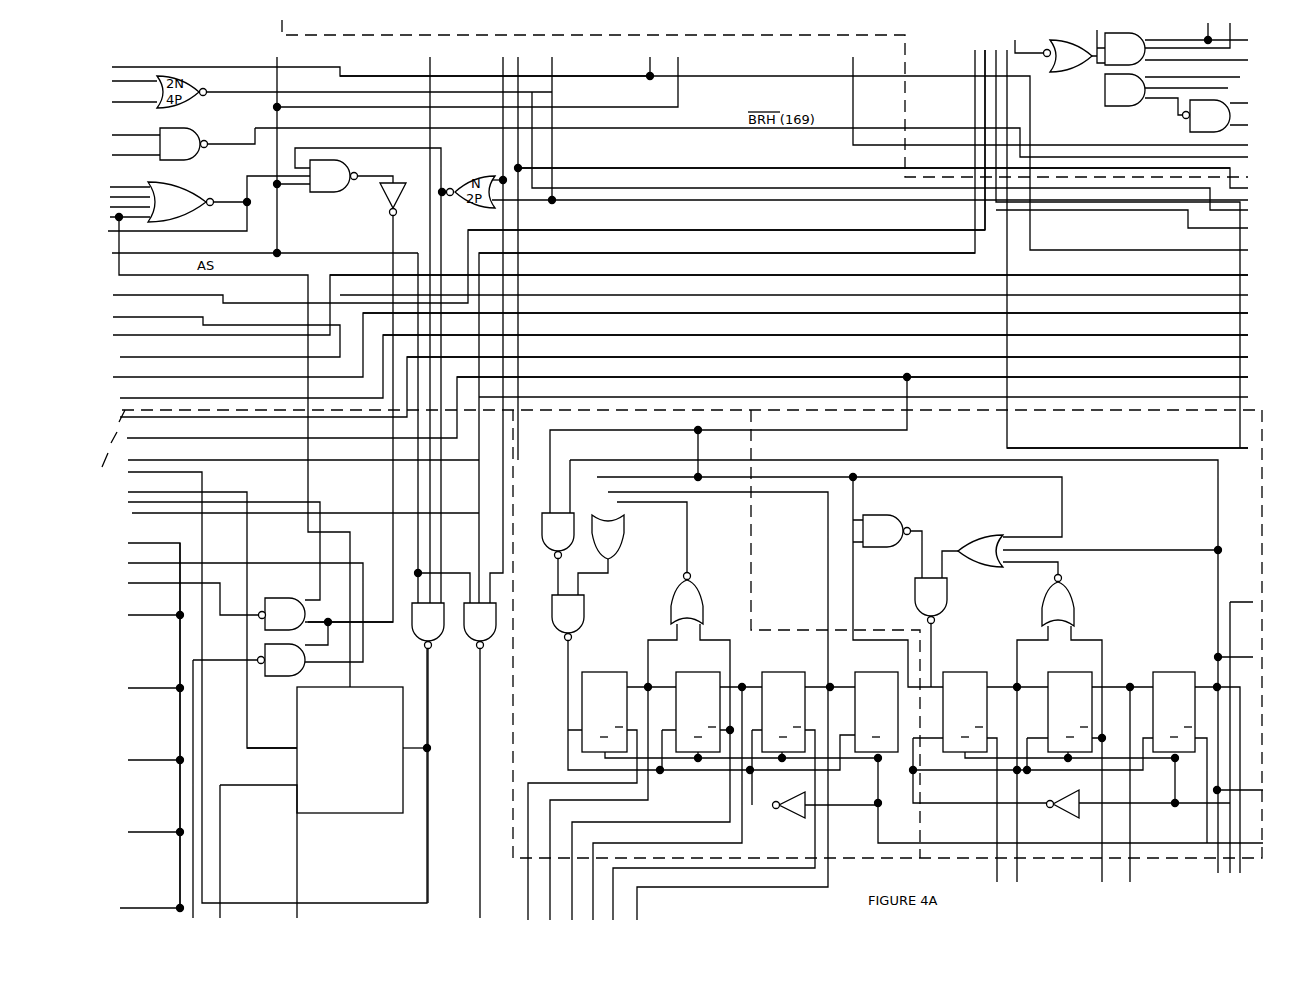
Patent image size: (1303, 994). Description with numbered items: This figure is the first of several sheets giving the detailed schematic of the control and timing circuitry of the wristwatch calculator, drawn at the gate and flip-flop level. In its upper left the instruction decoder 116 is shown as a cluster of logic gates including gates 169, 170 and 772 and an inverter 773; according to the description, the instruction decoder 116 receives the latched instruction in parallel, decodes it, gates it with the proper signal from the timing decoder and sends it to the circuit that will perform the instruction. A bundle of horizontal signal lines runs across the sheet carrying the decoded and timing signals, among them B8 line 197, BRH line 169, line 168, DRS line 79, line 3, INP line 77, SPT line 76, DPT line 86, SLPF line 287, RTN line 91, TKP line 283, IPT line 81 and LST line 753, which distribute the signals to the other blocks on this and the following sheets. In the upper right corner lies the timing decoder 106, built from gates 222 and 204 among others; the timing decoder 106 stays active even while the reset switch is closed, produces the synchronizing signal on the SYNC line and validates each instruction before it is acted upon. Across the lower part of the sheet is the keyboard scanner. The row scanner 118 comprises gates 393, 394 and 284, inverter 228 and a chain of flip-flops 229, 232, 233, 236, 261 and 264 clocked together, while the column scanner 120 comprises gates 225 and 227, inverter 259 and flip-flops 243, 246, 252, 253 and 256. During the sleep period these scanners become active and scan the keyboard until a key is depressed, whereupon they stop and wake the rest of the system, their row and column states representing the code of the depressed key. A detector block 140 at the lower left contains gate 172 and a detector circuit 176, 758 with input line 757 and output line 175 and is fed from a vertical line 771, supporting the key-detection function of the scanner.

The NAND gate 169 / BRH signal 169 is at (207, 145).
The NOR gate 170 is at (229, 199).
The instruction decoder 116 is at (359, 385).
The NAND gate 772 is at (359, 375).
The inverter 773 is at (333, 225).
The B8 signal line 197 is at (495, 67).
The DRS signal line 79 is at (791, 212).
The signal line 168 is at (874, 177).
The signal line 3 is at (727, 244).
The INP signal line 77 is at (585, 258).
The SPT signal line 76 is at (628, 279).
The DPT signal line 86 is at (805, 305).
The SLPF signal line 287 is at (738, 320).
The RTN signal line 91 is at (800, 342).
The TKP signal line 283 is at (852, 437).
The IPT signal line 81 is at (773, 383).
The LST signal line 753 is at (1127, 439).
The timing decoder 106 is at (1131, 77).
The OR gate 222 is at (1060, 51).
The NAND gate 204 is at (1201, 116).
The detector block 140 is at (329, 585).
The NAND gate 172 is at (320, 637).
The detector DET. H 176 is at (350, 750).
The detector DET. H 758 is at (350, 750).
The input line 757 is at (272, 743).
The output line 175 is at (417, 744).
The bus line 771 is at (171, 725).
The row scanner 118 is at (895, 675).
The AND gate 393 is at (551, 554).
The AND gate 394 is at (703, 682).
The NOR gate 284 is at (640, 746).
The flip-flop 229 is at (604, 712).
The flip-flop 232 is at (604, 712).
The flip-flop 233 is at (698, 712).
The flip-flop 236 is at (698, 712).
The flip-flop 261 is at (876, 712).
The flip-flop 264 is at (876, 712).
The inverter 228 is at (816, 808).
The column scanner 120 is at (1058, 679).
The NAND gate 225 is at (887, 546).
The NOR gate 227 is at (1059, 727).
The flip-flop 243 is at (965, 712).
The flip-flop 246 is at (965, 712).
The flip-flop 252 is at (1070, 712).
The flip-flop 253 is at (1174, 712).
The flip-flop 256 is at (1174, 712).
The inverter 259 is at (1128, 808).